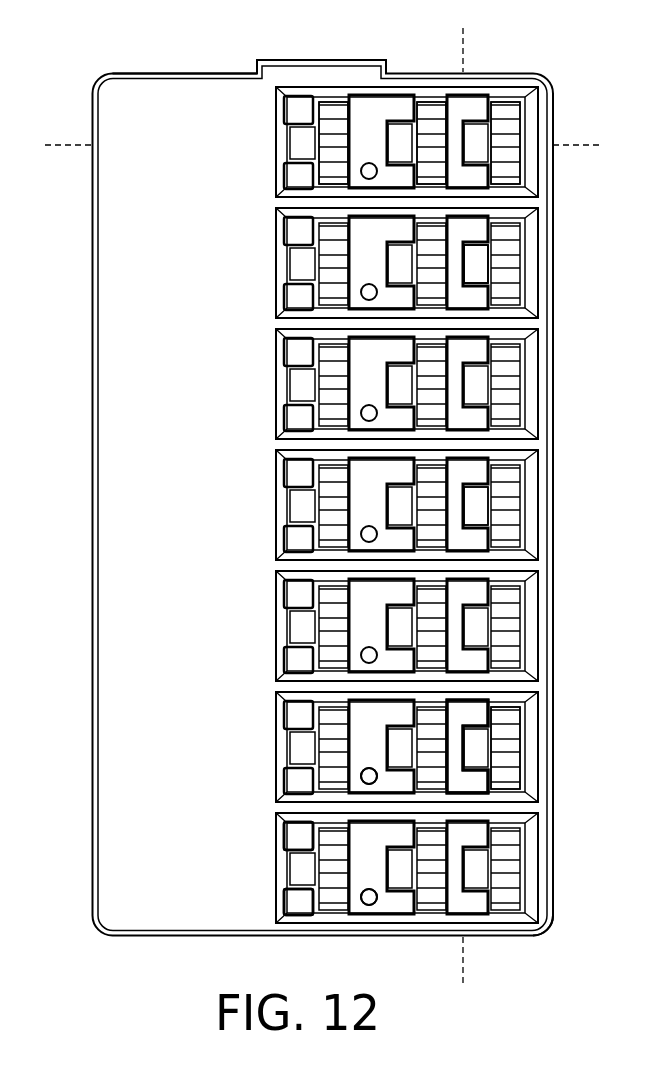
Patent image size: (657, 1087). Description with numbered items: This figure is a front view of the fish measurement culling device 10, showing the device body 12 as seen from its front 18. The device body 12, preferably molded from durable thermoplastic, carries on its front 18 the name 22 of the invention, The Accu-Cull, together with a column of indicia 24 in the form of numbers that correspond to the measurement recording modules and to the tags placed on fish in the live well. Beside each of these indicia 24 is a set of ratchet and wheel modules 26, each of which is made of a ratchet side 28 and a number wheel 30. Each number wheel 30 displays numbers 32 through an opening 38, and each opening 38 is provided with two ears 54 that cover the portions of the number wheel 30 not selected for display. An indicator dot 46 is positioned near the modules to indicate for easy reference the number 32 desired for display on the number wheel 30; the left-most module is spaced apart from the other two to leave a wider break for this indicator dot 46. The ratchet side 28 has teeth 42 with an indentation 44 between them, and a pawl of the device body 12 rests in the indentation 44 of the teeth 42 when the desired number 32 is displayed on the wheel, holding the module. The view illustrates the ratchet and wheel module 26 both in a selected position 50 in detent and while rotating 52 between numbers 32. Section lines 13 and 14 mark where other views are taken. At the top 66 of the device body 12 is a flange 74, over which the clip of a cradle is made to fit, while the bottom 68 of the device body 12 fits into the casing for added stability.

The fish measurement culling device 10 is at (314, 500).
The device body 12 is at (297, 498).
The section line 13- 13 is at (500, 22).
The section line 14- 14 is at (45, 176).
The front 18 is at (110, 268).
The name 22 is at (133, 600).
The indicia 24 is at (228, 652).
The ratchet and wheel module 26 is at (528, 864).
The ratchet side 28 is at (508, 624).
The number wheel 30 is at (487, 252).
The numbers 32 is at (487, 268).
The opening 38 is at (470, 507).
The teeth 42 is at (502, 762).
The indentation 44 is at (513, 776).
The indicator dot 46 is at (365, 901).
The selected position 50 is at (434, 105).
The rotating 52 is at (507, 105).
The ears 54 is at (302, 901).
The top 66 is at (182, 73).
The bottom 68 is at (511, 935).
The flange 74 is at (278, 60).